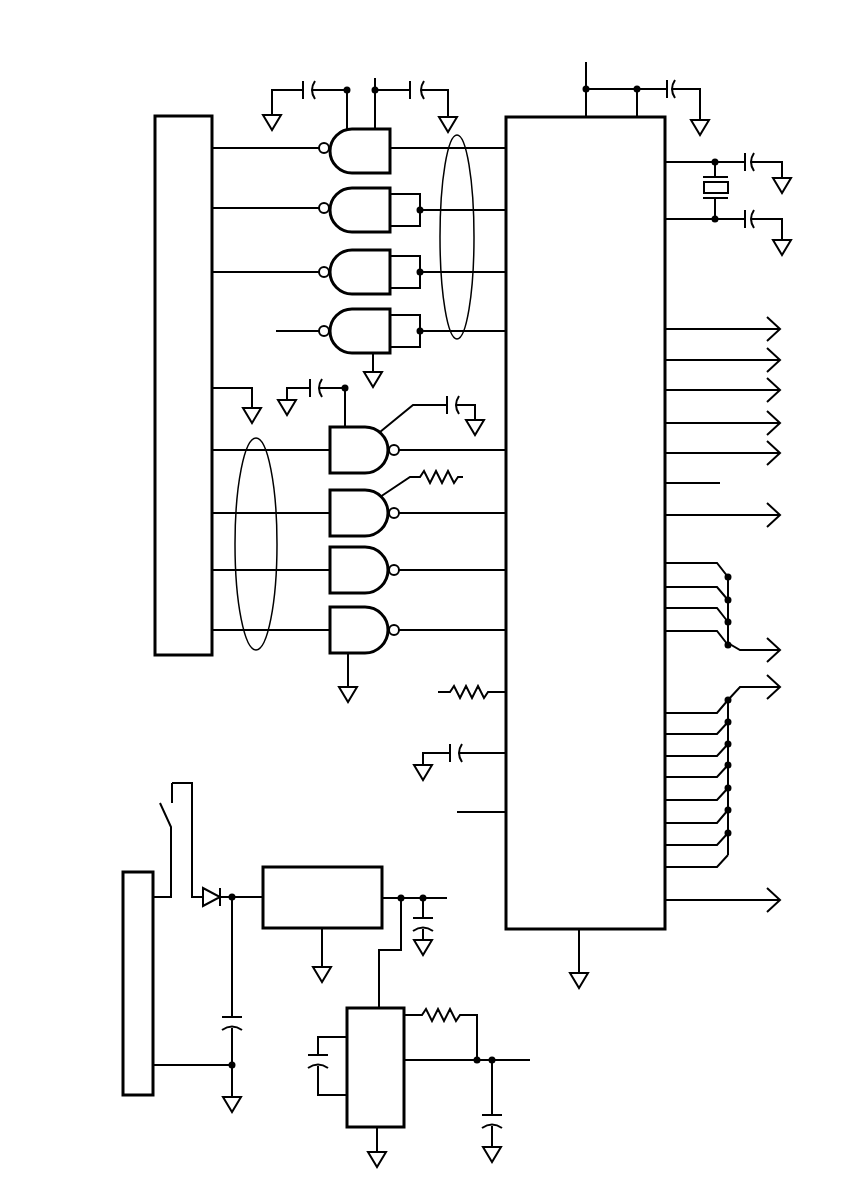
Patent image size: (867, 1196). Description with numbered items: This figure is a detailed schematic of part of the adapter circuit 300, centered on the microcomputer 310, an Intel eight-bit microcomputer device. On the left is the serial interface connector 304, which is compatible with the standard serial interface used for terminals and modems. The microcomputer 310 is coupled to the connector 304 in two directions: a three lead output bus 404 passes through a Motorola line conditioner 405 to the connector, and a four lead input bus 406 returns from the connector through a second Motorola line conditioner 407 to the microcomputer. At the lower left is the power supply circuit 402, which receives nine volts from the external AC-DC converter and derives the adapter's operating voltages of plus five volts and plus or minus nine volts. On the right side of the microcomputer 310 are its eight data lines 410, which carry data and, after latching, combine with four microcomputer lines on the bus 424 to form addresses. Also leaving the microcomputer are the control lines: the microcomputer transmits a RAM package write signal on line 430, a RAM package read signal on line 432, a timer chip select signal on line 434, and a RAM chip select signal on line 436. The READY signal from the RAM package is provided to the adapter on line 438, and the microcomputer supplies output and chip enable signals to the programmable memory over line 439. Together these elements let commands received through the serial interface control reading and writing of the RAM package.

The adapter circuit 300 is at (417, 27).
The RS-232 interface connector 304 is at (205, 658).
The microcomputer 310 is at (596, 552).
The power supply circuit 402 is at (514, 1136).
The output bus 404 is at (460, 135).
The line conditioner 405 is at (318, 194).
The input bus 406 is at (248, 647).
The line conditioner 407 is at (447, 542).
The data lines 410 is at (760, 686).
The bus 424 is at (768, 646).
The line 430 is at (735, 390).
The line 432 is at (732, 360).
The line 434 is at (734, 423).
The line 436 is at (732, 453).
The line 438 is at (730, 515).
The line 439 is at (702, 327).